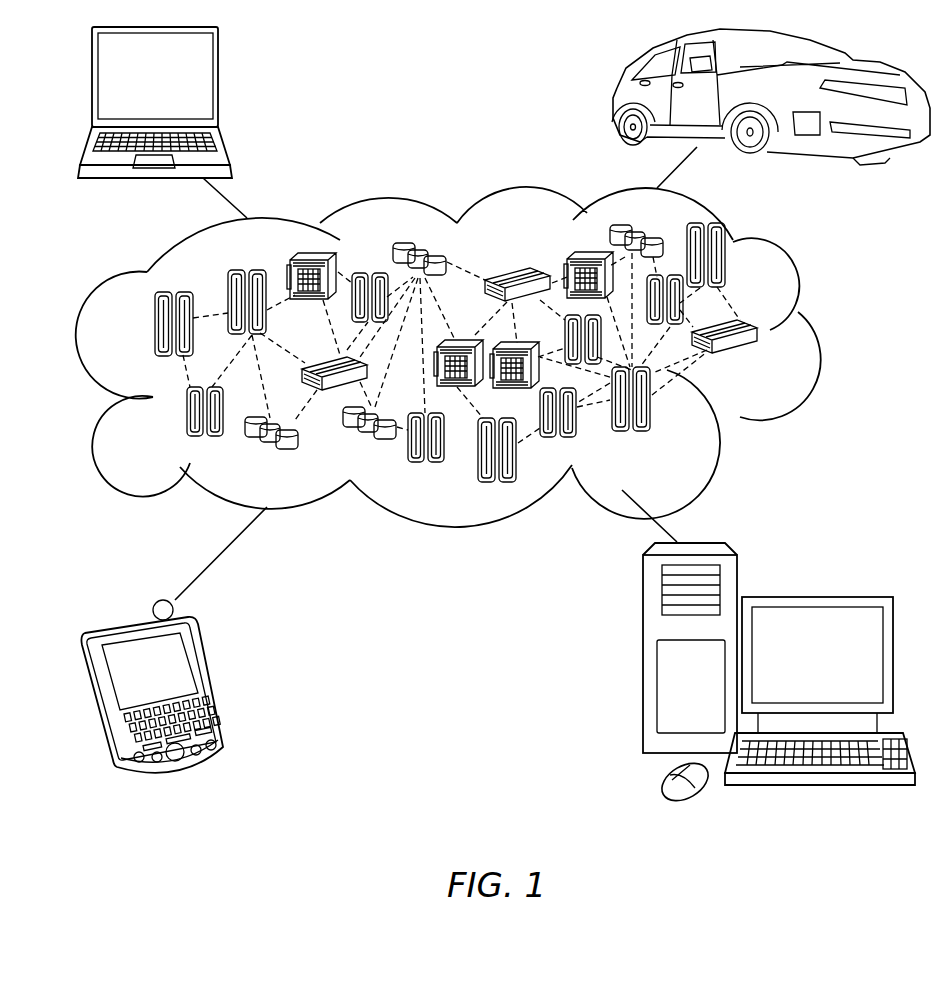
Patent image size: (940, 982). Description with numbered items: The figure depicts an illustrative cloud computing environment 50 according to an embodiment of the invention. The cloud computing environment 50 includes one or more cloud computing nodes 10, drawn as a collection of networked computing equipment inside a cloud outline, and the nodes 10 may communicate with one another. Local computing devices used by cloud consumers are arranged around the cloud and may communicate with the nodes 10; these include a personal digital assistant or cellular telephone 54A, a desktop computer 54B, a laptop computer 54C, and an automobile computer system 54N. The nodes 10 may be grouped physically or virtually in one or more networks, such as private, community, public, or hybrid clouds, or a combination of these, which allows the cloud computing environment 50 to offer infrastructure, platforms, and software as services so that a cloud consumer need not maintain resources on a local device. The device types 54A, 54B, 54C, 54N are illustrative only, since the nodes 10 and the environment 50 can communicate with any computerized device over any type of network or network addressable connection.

The cloud computing nodes 10 is at (475, 357).
The cloud computing environment 50 is at (818, 332).
The personal digital assistant (PDA) or cellular telephone 54A is at (208, 682).
The desktop computer 54B is at (815, 597).
The laptop computer 54C is at (217, 82).
The automobile computer system 54N is at (617, 100).